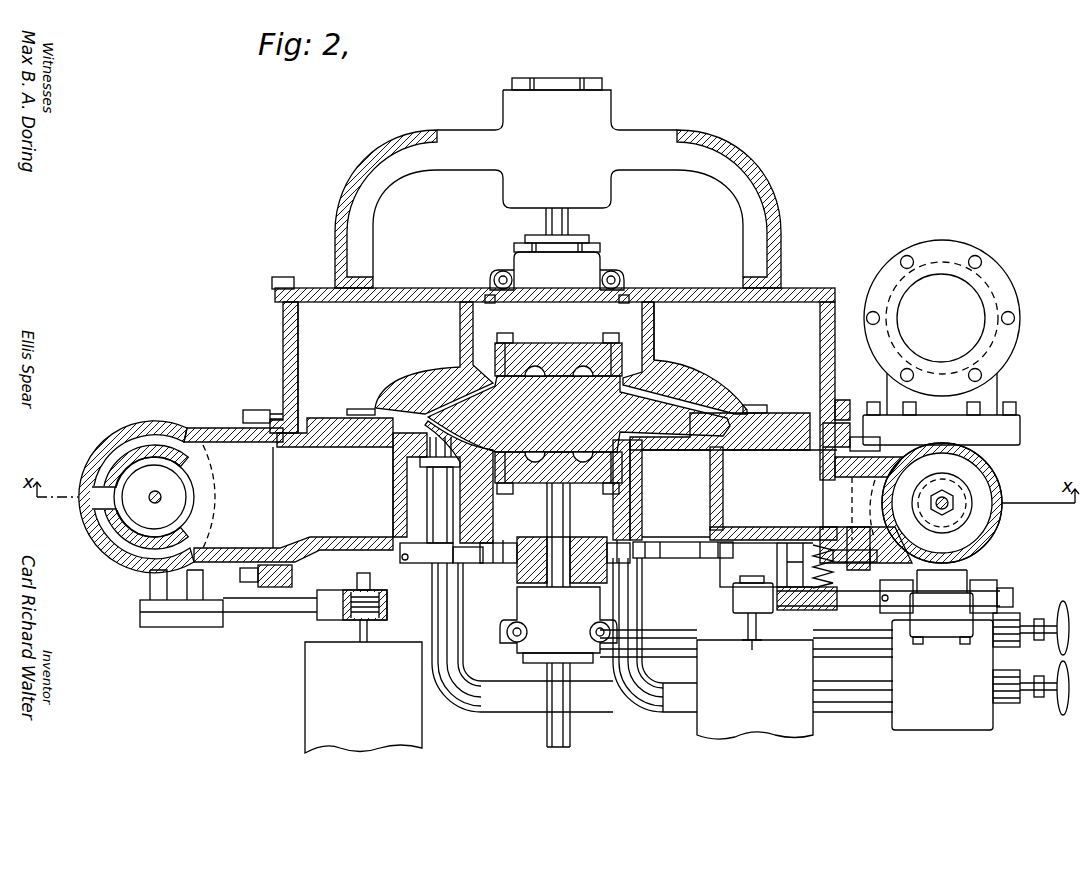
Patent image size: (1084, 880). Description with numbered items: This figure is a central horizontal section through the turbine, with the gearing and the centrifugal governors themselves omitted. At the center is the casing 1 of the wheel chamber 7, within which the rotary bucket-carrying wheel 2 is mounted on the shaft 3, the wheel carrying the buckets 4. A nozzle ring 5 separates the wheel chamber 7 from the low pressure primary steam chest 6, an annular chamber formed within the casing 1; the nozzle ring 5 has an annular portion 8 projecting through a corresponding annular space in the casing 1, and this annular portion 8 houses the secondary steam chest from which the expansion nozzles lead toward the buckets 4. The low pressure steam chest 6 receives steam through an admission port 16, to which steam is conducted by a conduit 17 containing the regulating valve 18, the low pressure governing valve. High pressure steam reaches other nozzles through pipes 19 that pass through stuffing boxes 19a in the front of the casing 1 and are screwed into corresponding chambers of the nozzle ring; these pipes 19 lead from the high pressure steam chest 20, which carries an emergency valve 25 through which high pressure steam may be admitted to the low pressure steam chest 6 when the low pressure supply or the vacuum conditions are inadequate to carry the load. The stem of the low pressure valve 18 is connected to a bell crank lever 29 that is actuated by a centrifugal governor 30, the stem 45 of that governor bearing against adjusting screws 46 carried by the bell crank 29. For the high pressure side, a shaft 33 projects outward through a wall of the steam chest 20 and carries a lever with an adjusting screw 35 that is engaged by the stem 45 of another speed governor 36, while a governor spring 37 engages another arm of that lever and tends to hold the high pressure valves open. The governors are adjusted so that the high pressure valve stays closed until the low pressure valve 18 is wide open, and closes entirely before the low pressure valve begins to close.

The casing 1 is at (283, 372).
The rotary bucket-carrying wheel 2 is at (462, 385).
The shaft 3 is at (570, 222).
The buckets 4 is at (350, 409).
The nozzle ring 5 is at (335, 425).
The low pressure primary steam chest 6 is at (760, 488).
The wheel chamber 7 is at (340, 335).
The annular portion 8 is at (380, 450).
The admission port 16 is at (273, 503).
The conduit 17 is at (237, 485).
The regulating valve 18 is at (140, 515).
The pipes 19 is at (470, 612).
The stuffing boxes 19a is at (470, 562).
The high pressure steam chest 20 is at (928, 716).
The emergency valve 25 is at (890, 480).
The bell crank lever 29 is at (143, 590).
The centrifugal governor 30 is at (307, 690).
The shaft 33 is at (855, 580).
The adjusting screw 35 is at (745, 583).
The speed governor 36 is at (700, 717).
The governor spring 37 is at (822, 543).
The stem 45 is at (368, 636).
The adjusting screws 46 is at (350, 622).